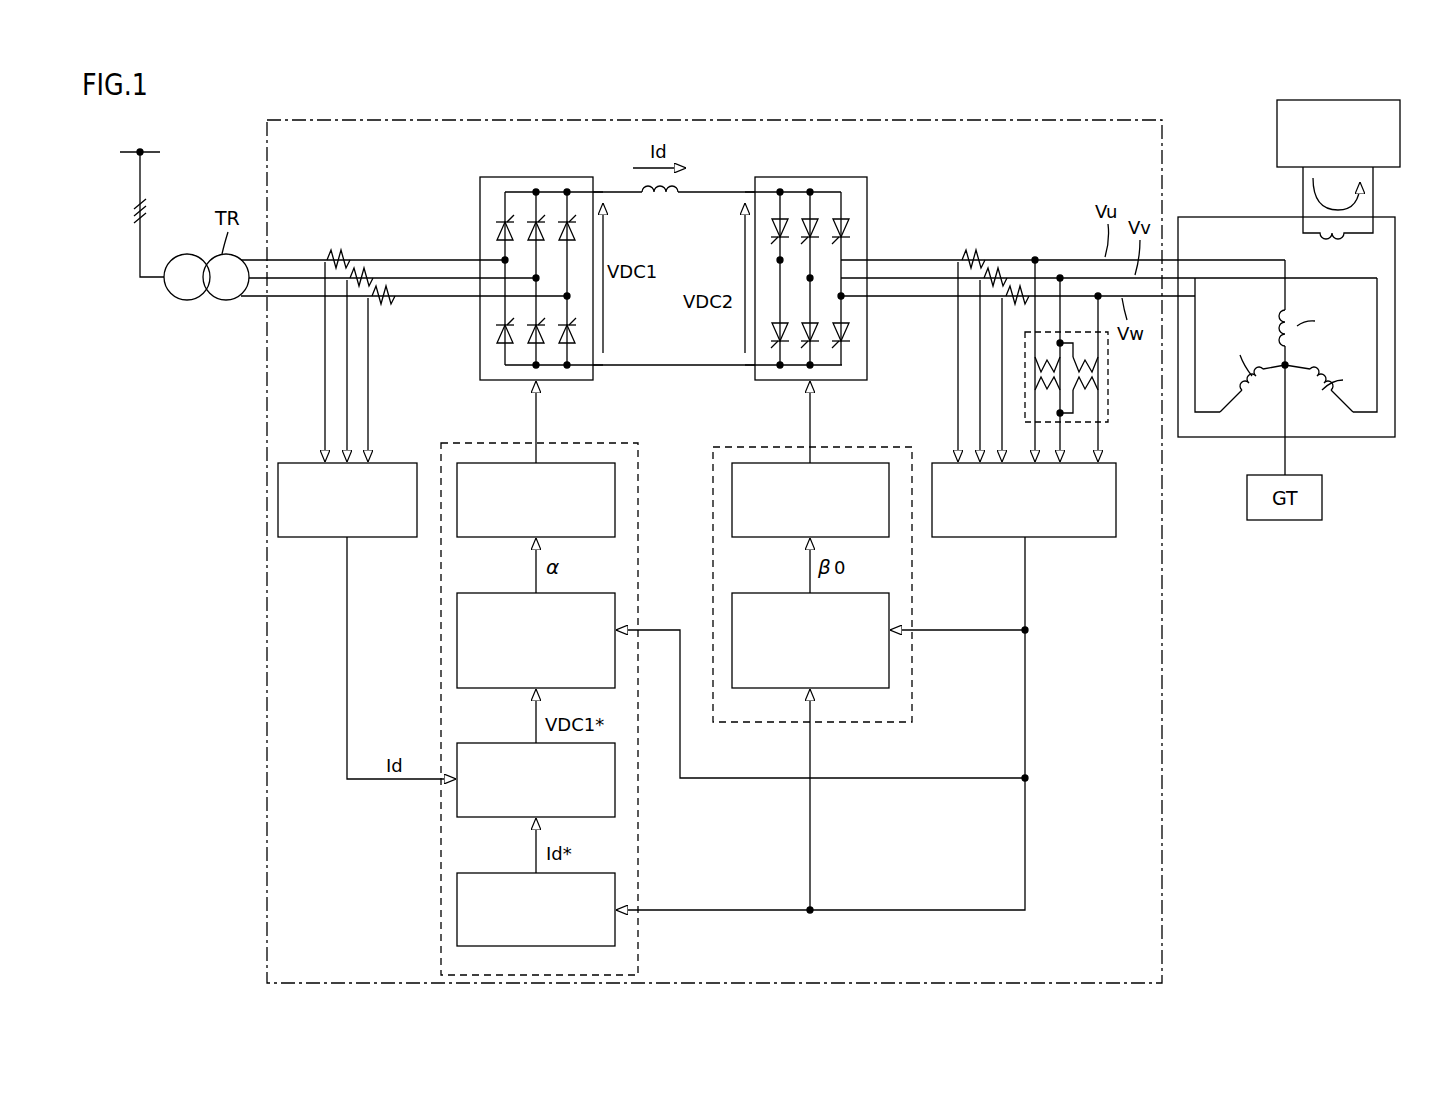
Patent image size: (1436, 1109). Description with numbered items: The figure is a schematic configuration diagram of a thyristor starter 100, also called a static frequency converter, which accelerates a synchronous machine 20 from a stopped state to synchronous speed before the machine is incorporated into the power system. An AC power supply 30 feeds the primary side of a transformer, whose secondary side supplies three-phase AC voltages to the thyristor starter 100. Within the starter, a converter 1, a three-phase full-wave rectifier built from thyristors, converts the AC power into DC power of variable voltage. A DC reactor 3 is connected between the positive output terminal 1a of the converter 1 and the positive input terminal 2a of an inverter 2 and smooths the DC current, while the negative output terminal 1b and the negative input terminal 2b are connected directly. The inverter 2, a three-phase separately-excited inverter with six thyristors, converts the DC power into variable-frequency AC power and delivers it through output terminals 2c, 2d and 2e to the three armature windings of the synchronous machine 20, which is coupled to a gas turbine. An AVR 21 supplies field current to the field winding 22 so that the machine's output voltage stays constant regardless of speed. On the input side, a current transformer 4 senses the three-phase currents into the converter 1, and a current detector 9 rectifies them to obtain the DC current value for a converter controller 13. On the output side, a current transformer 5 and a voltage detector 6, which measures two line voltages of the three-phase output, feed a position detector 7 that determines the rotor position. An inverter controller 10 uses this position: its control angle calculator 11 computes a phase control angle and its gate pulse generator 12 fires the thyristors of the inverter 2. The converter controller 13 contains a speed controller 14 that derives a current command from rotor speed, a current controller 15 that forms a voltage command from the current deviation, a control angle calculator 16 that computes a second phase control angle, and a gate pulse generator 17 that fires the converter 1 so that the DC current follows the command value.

The converter 1 is at (535, 177).
The positive output terminal 1a is at (593, 192).
The negative output terminal 1b is at (593, 380).
The inverter 2 is at (810, 177).
The positive input terminal 2a is at (755, 192).
The negative input terminal 2b is at (755, 380).
The output terminal 2c is at (865, 260).
The output terminal 2d is at (870, 278).
The output terminal 2e is at (866, 298).
The DC reactor 3 is at (659, 200).
The current transformer 4 is at (336, 250).
The current transformer 5 is at (972, 255).
The voltage detector 6 is at (1110, 416).
The position detector 7 is at (1085, 537).
The current detector 9 is at (383, 537).
The inverter controller 10 is at (915, 688).
The control angle calculator 11 is at (865, 688).
The gate pulse generator 12 is at (865, 537).
The converter controller 13 is at (640, 942).
The speed controller 14 is at (590, 946).
The current controller 15 is at (590, 817).
The control angle calculator 16 is at (590, 688).
The gate pulse generator 17 is at (590, 537).
The synchronous machine 20 is at (1230, 217).
The AVR 21 is at (1277, 132).
The field winding 22 is at (1374, 190).
The AC power supply 30 is at (160, 146).
The thyristor starter 100 is at (1163, 820).